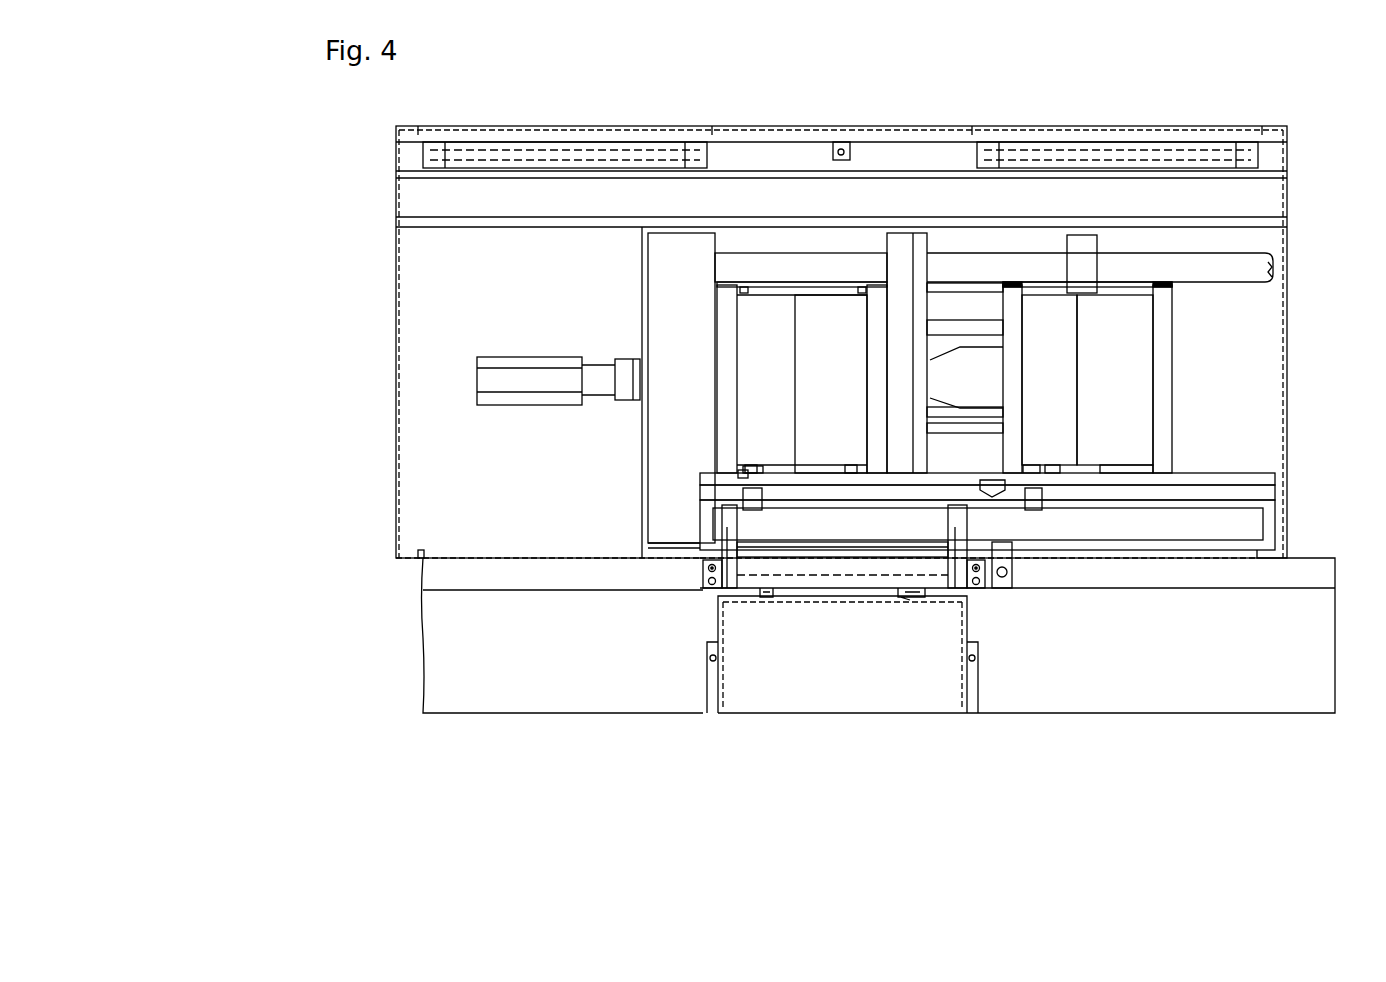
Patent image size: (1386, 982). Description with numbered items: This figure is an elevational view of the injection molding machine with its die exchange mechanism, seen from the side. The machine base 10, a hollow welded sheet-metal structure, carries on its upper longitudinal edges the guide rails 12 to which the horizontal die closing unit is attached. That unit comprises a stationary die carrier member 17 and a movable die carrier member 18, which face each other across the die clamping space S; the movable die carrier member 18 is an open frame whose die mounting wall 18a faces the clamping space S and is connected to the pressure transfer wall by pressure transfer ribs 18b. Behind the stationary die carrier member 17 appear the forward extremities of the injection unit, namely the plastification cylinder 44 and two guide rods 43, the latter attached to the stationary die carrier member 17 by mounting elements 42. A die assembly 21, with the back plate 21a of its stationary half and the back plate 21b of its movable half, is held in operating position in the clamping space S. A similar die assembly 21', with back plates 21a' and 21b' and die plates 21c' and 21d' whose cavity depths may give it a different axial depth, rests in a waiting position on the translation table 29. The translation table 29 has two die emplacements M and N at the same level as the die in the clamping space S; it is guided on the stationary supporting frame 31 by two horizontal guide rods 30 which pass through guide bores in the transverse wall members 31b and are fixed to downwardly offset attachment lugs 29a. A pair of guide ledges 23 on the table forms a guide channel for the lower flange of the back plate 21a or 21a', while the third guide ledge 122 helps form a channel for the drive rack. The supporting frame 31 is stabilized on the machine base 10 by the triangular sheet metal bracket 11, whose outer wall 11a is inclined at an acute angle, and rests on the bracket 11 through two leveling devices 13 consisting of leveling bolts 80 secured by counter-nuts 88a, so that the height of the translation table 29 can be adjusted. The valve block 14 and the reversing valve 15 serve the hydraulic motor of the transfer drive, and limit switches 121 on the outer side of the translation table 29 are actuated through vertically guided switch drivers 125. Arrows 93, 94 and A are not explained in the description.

The machine base 10 is at (1315, 641).
The sheet metal bracket 11 is at (990, 632).
The outer wall 11a is at (890, 677).
The guide rails 12 is at (1190, 572).
The leveling devices 13 is at (893, 598).
The valve block 14 is at (1012, 562).
The reversing valve 15 is at (1000, 600).
The stationary die carrier member 17 is at (666, 268).
The movable die carrier member 18 is at (876, 362).
The die mounting wall 18a is at (896, 272).
The pressure transfer ribs 18b is at (980, 325).
The die assembly 21 is at (773, 377).
The back plate 21a is at (761, 384).
The back plate 21b is at (841, 379).
The die assembly 21' is at (1133, 377).
The back plate 21a' is at (1073, 379).
The back plate 21b' is at (1170, 384).
The die plate 21c' is at (1040, 282).
The die plate 21d' is at (1149, 282).
The guide ledges 23 is at (740, 478).
The translation table 29 is at (1288, 522).
The attachment lugs 29a is at (1268, 540).
The guide rods 30 is at (1130, 525).
The supporting frame 31 is at (802, 602).
The transverse wall members 31b is at (727, 575).
The mounting elements 42 is at (628, 378).
The guide rods 43 is at (550, 380).
The plastification cylinder 44 is at (532, 362).
The leveling bolts 80 is at (915, 600).
The counter-nuts 88a is at (923, 585).
The direction arrow 93 is at (773, 192).
The direction arrow 94 is at (822, 238).
The limit switches 121 is at (755, 512).
The third guide ledge 122 is at (782, 473).
The switch drivers 125 is at (751, 468).
The die emplacement M is at (783, 457).
The die emplacement N is at (1113, 457).
The die clamping space S is at (822, 407).
The view direction A is at (1380, 496).